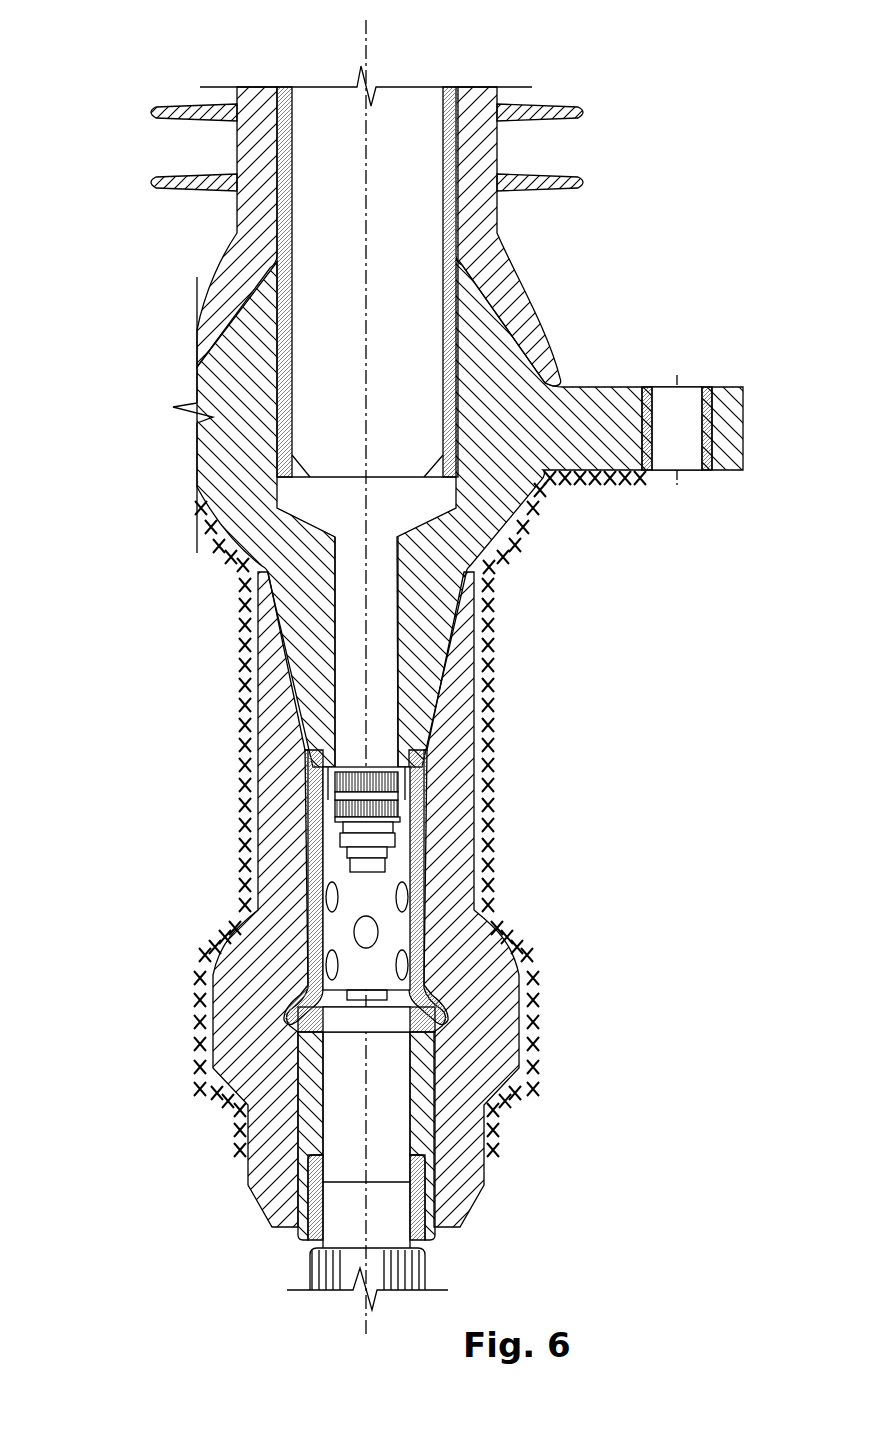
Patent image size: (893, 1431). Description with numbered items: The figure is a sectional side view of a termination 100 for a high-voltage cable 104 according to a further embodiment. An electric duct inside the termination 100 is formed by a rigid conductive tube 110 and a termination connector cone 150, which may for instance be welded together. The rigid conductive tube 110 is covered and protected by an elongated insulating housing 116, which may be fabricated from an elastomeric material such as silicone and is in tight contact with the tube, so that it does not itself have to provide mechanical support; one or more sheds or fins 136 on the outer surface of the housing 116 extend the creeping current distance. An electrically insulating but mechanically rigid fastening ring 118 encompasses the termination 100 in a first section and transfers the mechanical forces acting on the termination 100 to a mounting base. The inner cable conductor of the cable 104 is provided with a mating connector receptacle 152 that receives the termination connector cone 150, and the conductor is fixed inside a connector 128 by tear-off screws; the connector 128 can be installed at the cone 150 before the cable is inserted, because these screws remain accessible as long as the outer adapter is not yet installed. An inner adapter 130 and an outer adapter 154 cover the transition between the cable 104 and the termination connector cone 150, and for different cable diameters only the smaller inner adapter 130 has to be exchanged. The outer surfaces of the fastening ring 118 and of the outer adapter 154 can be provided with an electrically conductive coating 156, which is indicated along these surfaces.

The termination 100 is at (138, 26).
The cable 104 is at (345, 1280).
The rigid conductive tube 110 is at (284, 340).
The insulating housing 116 is at (478, 98).
The fastening ring 118 is at (505, 355).
The screwed connector 128 is at (338, 935).
The inner adapter 130 is at (420, 1118).
The sheds 136 is at (570, 108).
The termination connector cone 150 is at (352, 672).
The connector receptacle 152 is at (398, 848).
The outer adapter 154 is at (457, 862).
The electrically conductive coating 156 is at (515, 548).